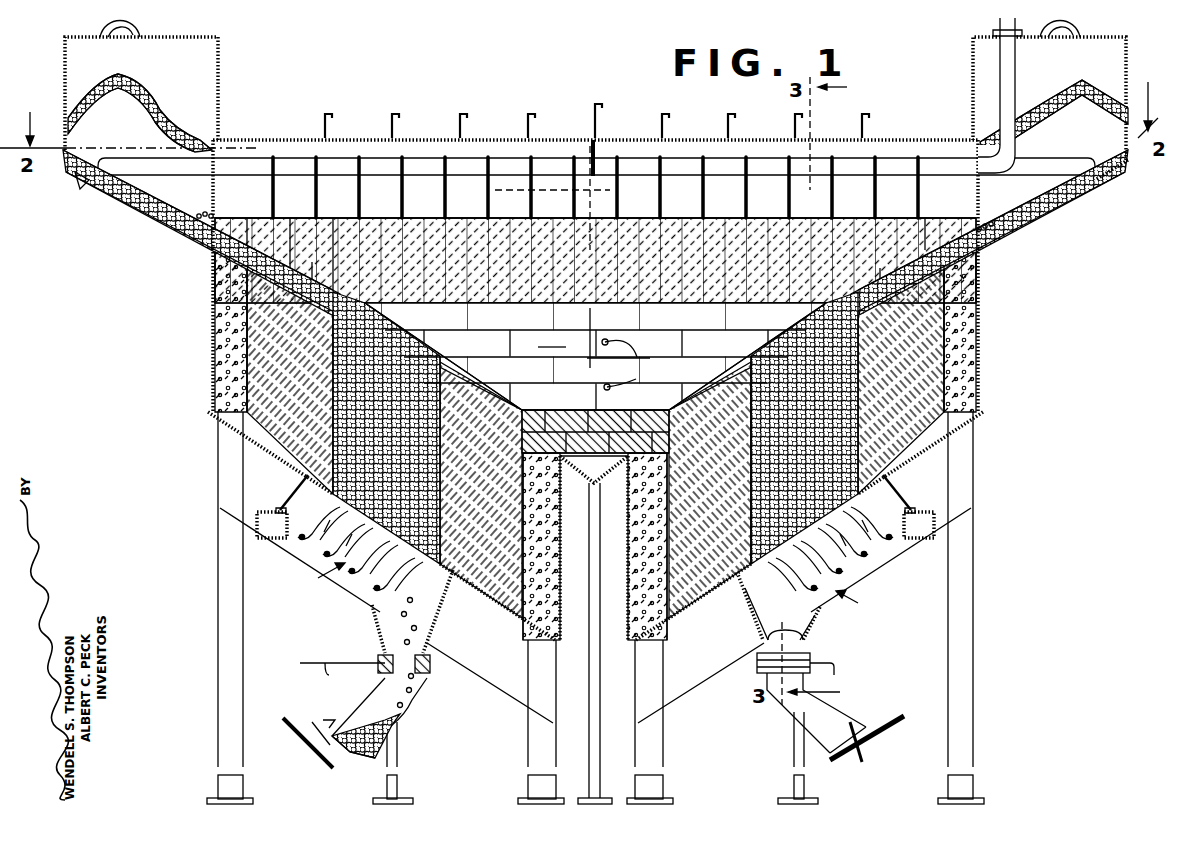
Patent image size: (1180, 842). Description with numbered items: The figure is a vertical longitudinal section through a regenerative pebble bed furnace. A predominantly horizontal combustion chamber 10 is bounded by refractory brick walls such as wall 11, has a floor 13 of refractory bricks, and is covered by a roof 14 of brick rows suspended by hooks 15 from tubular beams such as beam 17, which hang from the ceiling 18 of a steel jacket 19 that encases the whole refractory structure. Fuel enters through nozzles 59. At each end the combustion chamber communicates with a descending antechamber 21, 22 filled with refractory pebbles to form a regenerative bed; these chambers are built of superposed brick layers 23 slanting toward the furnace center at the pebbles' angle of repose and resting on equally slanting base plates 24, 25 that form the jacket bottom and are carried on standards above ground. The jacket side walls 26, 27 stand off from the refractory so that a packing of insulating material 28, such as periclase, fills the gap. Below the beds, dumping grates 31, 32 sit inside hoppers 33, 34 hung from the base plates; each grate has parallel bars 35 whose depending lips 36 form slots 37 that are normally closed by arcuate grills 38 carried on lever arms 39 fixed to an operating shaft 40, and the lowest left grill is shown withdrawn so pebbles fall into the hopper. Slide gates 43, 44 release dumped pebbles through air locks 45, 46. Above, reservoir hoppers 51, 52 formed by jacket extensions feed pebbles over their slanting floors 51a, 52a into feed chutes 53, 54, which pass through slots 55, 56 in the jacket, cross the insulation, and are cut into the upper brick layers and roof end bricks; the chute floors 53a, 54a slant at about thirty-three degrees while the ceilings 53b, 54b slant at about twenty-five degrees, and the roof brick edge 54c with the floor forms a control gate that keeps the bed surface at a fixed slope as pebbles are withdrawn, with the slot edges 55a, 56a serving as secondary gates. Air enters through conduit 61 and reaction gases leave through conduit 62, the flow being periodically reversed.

The combustion chamber 10 is at (722, 345).
The wall 11 is at (552, 336).
The floor 13 is at (571, 426).
The roof 14 is at (702, 242).
The hooks 15 is at (396, 186).
The horizontal beam 17 is at (468, 165).
The ceiling 18 is at (634, 136).
The steel jacket 19 is at (213, 396).
The antechamber 21 is at (400, 420).
The antechamber 22 is at (823, 410).
The layers of refractory bricks 23 is at (870, 428).
The base plate 24 is at (250, 444).
The base plate 25 is at (933, 441).
The side wall 26 is at (214, 370).
The side wall 27 is at (623, 600).
The insulating material 28 is at (214, 346).
The dumping grate 31 is at (310, 566).
The dumping grate 32 is at (866, 582).
The hopper 33 is at (432, 613).
The hopper 34 is at (746, 601).
The parallel bars 35 is at (360, 508).
The depending lips 36 is at (612, 492).
The slots 37 is at (600, 519).
The arcuate grills 38 is at (334, 518).
The lever arms 39 is at (388, 612).
The operating shaft 40 is at (578, 594).
The slide gate 43 is at (300, 666).
The slide gate 44 is at (835, 667).
The air lock 45 is at (395, 719).
The air lock 46 is at (800, 721).
The hopper 51 is at (203, 78).
The slanting floor 51a is at (150, 204).
The hopper 52 is at (998, 69).
The slanting floor 52a is at (1070, 200).
The feed chute 53 is at (188, 241).
The channel floor 53a is at (283, 247).
The channel ceiling 53b is at (335, 292).
The feed chute 54 is at (993, 250).
The channel floor 54a is at (985, 284).
The channel ceiling 54b is at (882, 290).
The control edge 54c is at (935, 262).
The slot 55 is at (214, 258).
The upper edge of slot 55a is at (217, 218).
The slot 56 is at (1015, 233).
The upper edge of slot 56a is at (986, 223).
The nozzles 59 is at (624, 349).
The conduit 61 is at (268, 512).
The conduit 62 is at (922, 512).